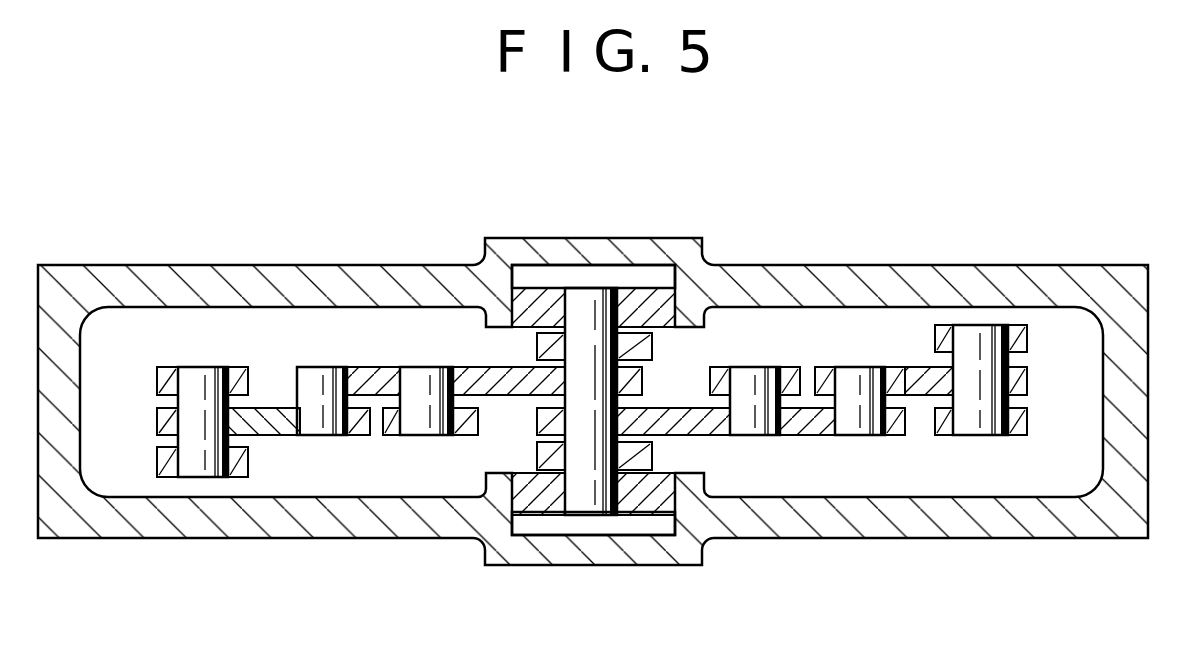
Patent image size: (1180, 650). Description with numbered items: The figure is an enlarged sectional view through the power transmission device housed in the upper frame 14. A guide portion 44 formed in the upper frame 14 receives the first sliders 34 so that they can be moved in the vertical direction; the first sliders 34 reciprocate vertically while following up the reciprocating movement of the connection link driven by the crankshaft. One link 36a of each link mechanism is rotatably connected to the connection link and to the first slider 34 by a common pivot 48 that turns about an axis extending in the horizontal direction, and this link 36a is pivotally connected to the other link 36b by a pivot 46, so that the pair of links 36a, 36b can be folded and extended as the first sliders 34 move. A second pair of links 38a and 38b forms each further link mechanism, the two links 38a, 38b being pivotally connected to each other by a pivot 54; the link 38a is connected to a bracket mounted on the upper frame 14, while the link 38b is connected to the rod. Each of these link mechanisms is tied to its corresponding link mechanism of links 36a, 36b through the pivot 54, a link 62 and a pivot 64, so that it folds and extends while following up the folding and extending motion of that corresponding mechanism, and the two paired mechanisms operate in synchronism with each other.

The upper frame 14 is at (911, 275).
The first slider 34 is at (652, 292).
The link 36a is at (372, 382).
The link 36b is at (392, 431).
The link 38a is at (162, 378).
The link 38b is at (163, 462).
The guide portion 44 is at (521, 286).
The pivot 46 is at (438, 378).
The common pivot 48 is at (597, 290).
The pivot 54 is at (210, 376).
The link 62 is at (286, 428).
The pivot 64 is at (316, 376).